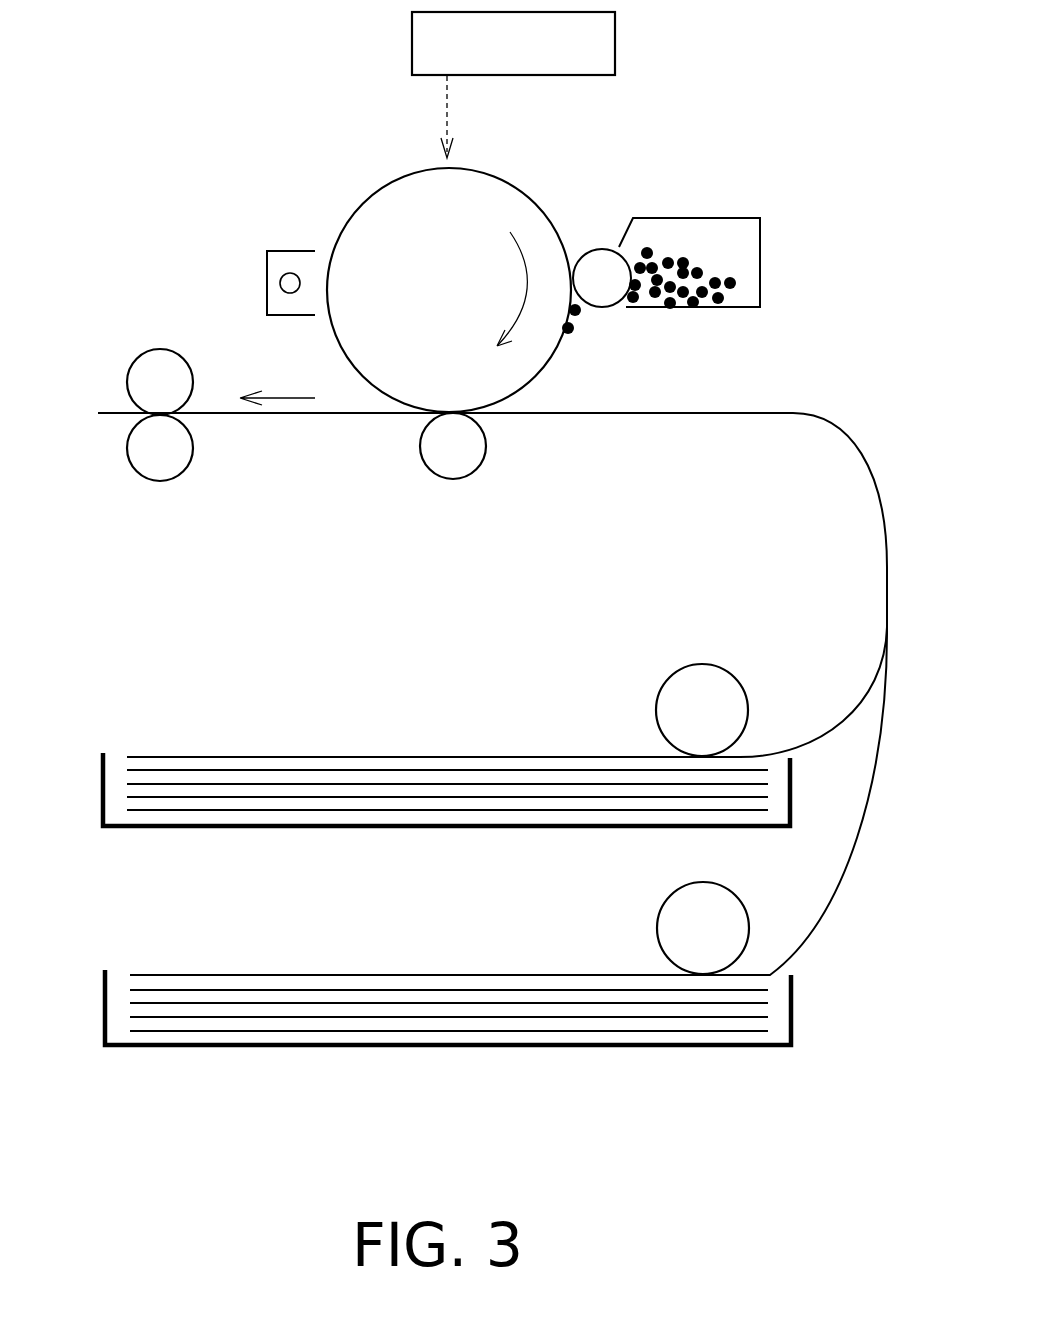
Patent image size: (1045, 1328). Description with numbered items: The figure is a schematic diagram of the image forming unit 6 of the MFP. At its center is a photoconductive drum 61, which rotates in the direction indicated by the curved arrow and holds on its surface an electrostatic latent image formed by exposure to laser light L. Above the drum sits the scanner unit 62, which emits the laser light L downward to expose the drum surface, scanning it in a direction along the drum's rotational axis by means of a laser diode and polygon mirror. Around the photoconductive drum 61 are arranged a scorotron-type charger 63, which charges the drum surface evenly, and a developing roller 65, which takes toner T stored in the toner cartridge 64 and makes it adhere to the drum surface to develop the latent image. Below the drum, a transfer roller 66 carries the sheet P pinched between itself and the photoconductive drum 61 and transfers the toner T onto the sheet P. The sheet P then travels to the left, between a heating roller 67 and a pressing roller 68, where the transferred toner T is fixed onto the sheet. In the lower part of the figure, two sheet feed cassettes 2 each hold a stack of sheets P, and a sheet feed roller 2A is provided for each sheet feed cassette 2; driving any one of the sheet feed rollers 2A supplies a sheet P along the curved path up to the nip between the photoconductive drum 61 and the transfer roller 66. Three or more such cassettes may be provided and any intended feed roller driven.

The image forming unit 6 is at (244, 93).
The scanner unit 62 is at (615, 38).
The laser light L is at (447, 110).
The photoconductive drum 61 is at (387, 183).
The scorotron-type charger 63 is at (267, 289).
The developing roller 65 is at (592, 249).
The toner cartridge 64 is at (732, 216).
The toner T is at (578, 314).
The heating roller 67 is at (130, 360).
The pressing roller 68 is at (190, 470).
The transfer roller 66 is at (486, 462).
The sheet P is at (723, 414).
The sheet feed roller 2A is at (660, 675).
The sheet feed cassette 2 is at (226, 828).